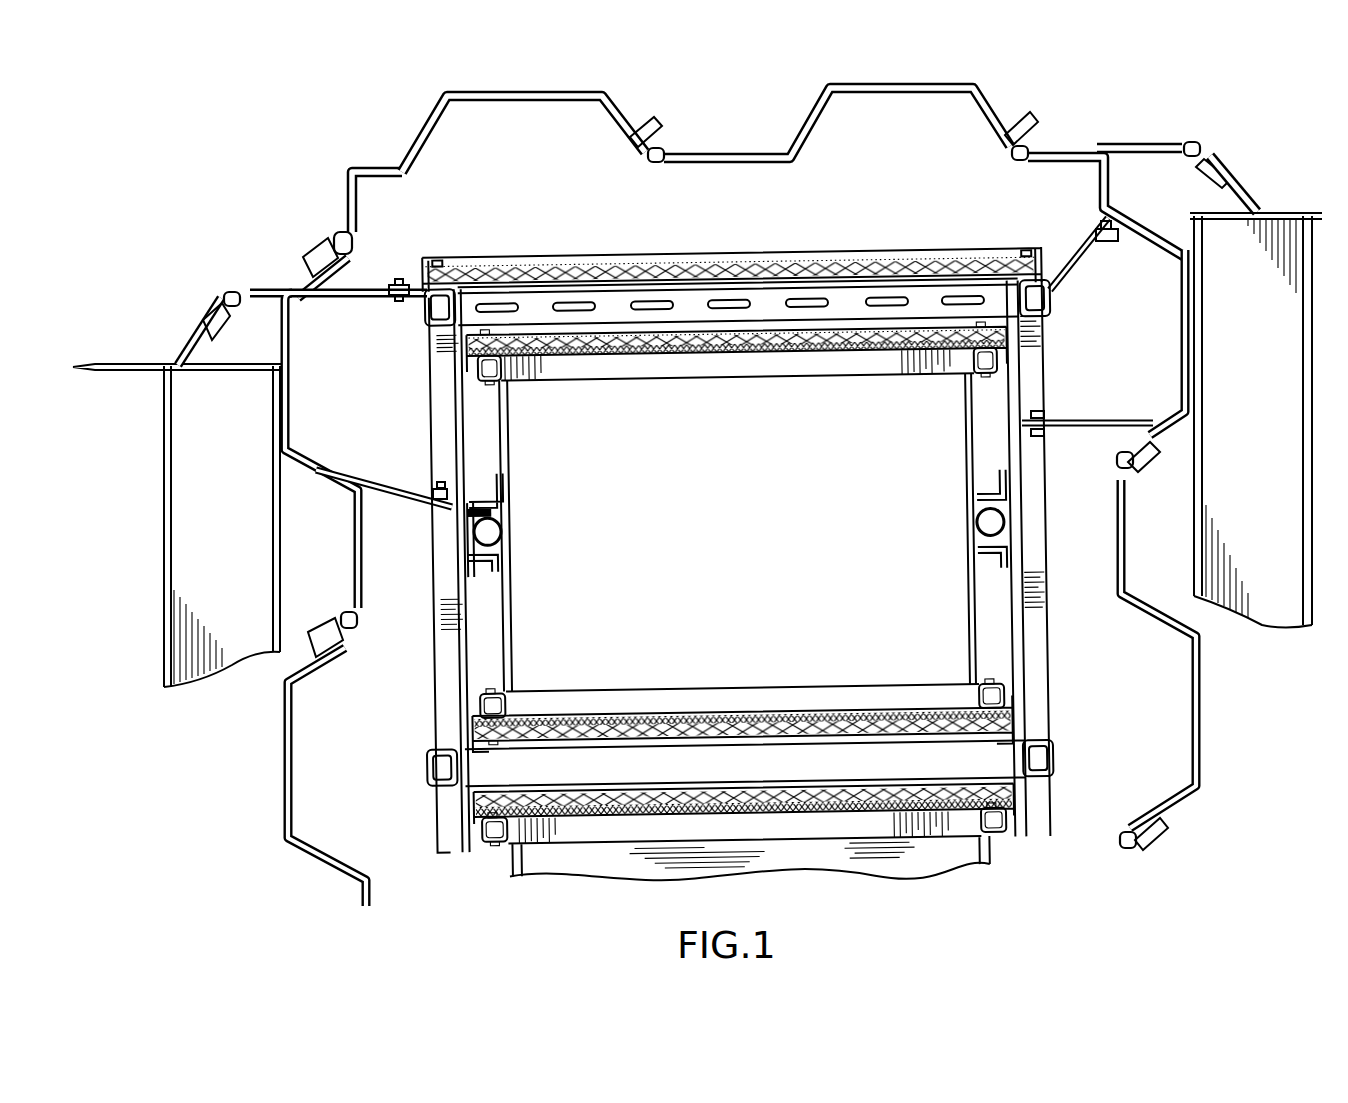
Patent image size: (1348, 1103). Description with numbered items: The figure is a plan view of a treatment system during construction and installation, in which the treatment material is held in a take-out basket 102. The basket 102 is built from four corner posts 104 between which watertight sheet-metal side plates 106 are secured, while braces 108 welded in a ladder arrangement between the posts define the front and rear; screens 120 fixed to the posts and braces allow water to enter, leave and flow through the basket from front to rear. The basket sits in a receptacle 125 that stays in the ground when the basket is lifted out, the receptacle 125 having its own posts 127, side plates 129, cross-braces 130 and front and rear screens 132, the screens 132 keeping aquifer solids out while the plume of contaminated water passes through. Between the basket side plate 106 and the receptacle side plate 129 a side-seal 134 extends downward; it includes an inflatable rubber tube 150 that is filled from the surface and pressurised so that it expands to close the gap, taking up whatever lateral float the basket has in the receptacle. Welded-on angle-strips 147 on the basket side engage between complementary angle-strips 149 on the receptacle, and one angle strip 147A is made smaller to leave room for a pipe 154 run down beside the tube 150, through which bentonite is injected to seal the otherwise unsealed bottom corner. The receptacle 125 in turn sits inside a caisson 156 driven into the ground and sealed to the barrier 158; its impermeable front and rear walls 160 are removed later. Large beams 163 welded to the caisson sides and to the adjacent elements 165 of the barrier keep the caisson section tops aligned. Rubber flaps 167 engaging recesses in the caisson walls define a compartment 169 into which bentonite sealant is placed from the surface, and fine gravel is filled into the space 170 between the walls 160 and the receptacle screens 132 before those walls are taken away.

The take-out basket 102 is at (500, 412).
The corner posts 104 is at (971, 690).
The side plate 106 is at (970, 595).
The braces 108 is at (835, 372).
The screens 120 is at (768, 343).
The receptacle 125 is at (462, 458).
The posts 127 is at (437, 770).
The side plates 129 is at (462, 655).
The cross-braces 130 is at (820, 748).
The front and rear screens 132 is at (935, 275).
The side-seal 134 is at (975, 531).
The angle-strips 147 is at (500, 553).
The smaller angle strip 147A is at (975, 497).
The complementary angle-strips 149 is at (460, 565).
The inflatable rubber tube 150 is at (495, 530).
The pipe 154 is at (470, 516).
The caisson 156 is at (343, 167).
The barrier 158 is at (97, 358).
The front and rear walls 160 is at (432, 118).
The beams 163 is at (200, 677).
The adjacent elements 165 is at (200, 325).
The flaps of rubber 167 is at (337, 297).
The compartment 169 is at (308, 413).
The space 170 is at (803, 180).